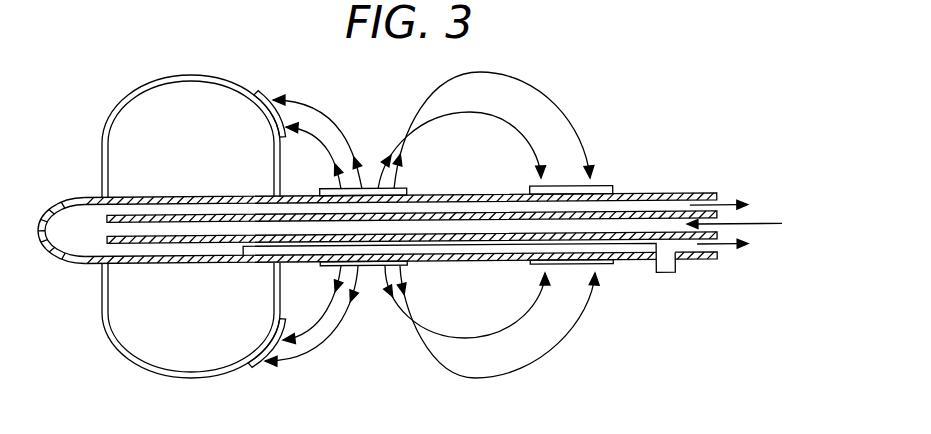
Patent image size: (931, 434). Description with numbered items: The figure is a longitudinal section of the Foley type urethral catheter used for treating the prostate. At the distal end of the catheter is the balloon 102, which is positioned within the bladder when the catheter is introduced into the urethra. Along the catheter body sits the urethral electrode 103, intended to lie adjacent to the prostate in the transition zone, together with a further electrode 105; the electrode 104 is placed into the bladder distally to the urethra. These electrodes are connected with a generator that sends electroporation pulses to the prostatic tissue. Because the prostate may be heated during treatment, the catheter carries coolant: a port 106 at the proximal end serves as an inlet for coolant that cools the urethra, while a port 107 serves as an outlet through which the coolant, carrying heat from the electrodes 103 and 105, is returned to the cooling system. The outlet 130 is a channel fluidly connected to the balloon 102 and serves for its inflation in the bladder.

The balloon 102 is at (160, 137).
The electrode 103 is at (366, 190).
The electrode 104 is at (263, 95).
The electrode 105 is at (607, 189).
The port 106 is at (758, 227).
The port 107 is at (718, 198).
The outlet 130 is at (665, 288).